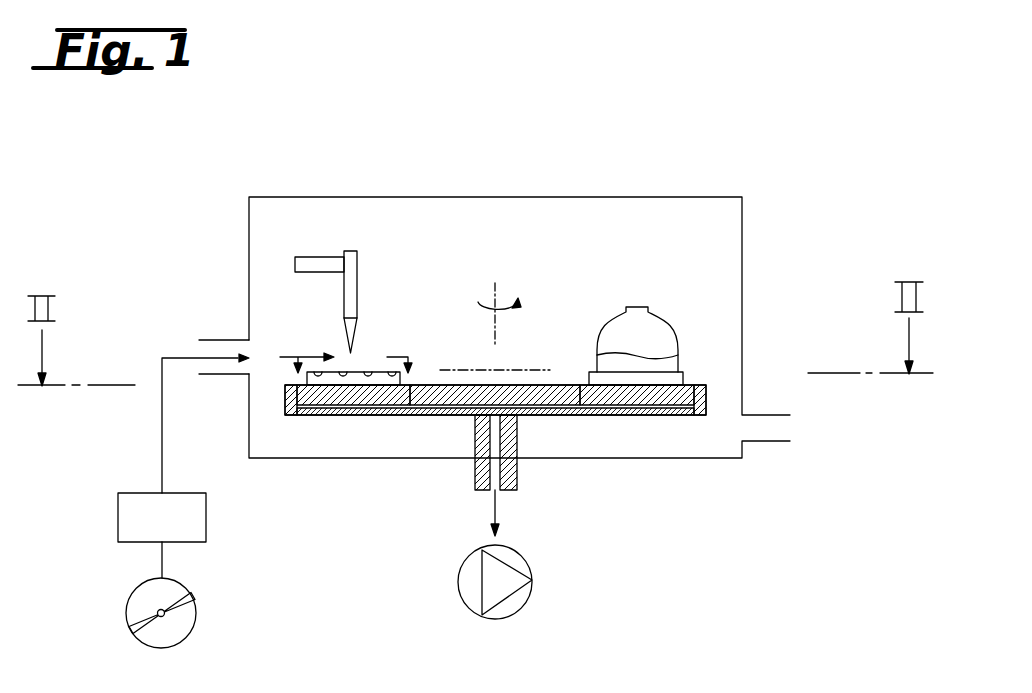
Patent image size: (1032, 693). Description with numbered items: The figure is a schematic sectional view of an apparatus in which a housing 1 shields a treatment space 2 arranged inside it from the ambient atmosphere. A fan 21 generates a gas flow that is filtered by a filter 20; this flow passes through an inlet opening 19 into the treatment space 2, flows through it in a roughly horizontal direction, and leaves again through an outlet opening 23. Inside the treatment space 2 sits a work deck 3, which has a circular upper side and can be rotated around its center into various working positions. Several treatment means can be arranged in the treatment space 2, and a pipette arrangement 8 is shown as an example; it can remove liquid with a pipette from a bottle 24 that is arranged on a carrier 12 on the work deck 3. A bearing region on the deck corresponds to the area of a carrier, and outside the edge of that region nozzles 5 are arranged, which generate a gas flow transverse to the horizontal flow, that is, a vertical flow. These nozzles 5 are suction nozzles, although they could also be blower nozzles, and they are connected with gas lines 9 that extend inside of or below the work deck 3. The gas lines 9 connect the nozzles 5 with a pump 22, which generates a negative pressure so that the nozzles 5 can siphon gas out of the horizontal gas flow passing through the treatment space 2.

The housing 1 is at (538, 128).
The treatment space 2 is at (593, 240).
The work deck 3 is at (499, 477).
The nozzles 5 is at (292, 395).
The pipette arrangement 8 is at (350, 255).
The gas lines 9 is at (393, 408).
The carrier 12 is at (680, 372).
The inlet opening 19 is at (243, 340).
The filter 20 is at (206, 522).
The fan 21 is at (198, 611).
The pump 22 is at (497, 618).
The outlet opening 23 is at (766, 415).
The bottle 24 is at (642, 307).